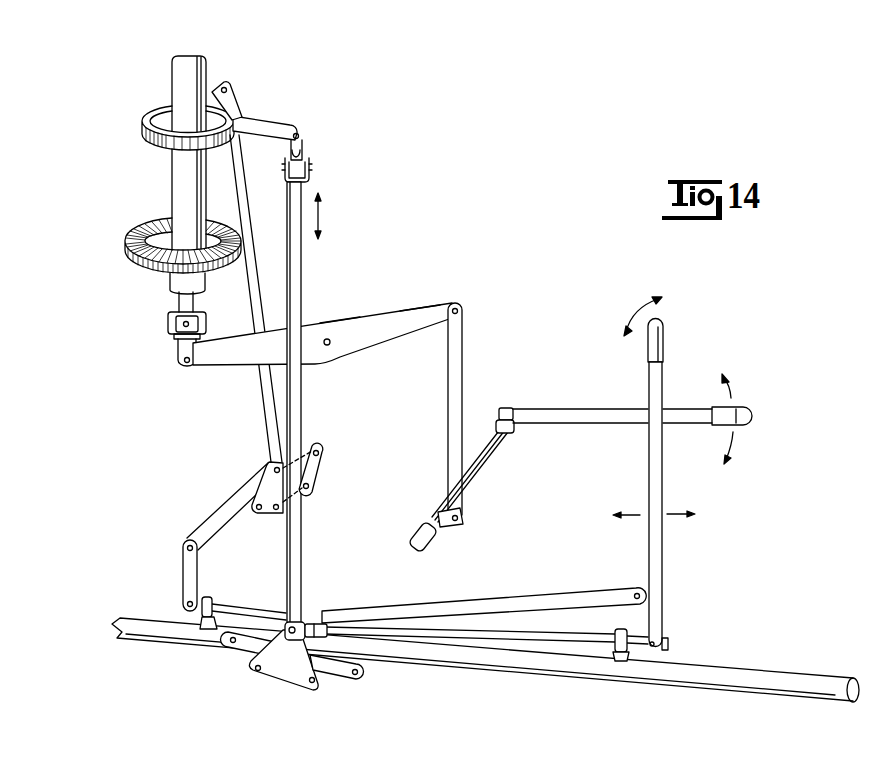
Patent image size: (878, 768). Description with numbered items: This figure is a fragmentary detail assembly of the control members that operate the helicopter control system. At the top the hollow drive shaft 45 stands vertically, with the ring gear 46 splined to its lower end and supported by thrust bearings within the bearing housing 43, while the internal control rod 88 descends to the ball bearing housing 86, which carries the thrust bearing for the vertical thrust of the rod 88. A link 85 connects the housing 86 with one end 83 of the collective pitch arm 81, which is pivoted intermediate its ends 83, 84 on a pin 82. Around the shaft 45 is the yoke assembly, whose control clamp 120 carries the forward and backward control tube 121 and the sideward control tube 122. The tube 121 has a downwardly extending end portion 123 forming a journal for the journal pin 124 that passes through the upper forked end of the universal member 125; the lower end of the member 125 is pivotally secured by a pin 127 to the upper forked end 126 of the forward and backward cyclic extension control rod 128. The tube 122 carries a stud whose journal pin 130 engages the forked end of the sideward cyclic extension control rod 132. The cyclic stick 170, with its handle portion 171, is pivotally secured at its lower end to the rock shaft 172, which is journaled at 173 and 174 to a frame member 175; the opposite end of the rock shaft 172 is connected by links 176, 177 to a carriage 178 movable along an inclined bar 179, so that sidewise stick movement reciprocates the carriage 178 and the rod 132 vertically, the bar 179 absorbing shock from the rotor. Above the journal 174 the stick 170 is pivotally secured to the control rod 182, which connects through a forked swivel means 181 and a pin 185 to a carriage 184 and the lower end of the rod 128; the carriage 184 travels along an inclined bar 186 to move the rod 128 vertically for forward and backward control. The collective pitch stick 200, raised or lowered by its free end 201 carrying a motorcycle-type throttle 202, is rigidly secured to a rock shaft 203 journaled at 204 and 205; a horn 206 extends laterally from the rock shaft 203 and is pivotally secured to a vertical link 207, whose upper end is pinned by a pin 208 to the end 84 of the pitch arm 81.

The bearing housing 43 is at (172, 286).
The hollow drive shaft 45 is at (172, 200).
The ring gear 46 is at (127, 250).
The collective pitch arm 81 is at (338, 332).
The pin 82 is at (327, 346).
The end of pitch arm 83 is at (223, 358).
The end of pitch arm 84 is at (417, 325).
The link 85 is at (180, 349).
The ball bearing housing 86 is at (170, 327).
The internal control rod 88 is at (197, 298).
The control clamp 120 is at (162, 146).
The forward and backward control tube 121 is at (278, 136).
The sideward control tube 122 is at (212, 88).
The downwardly extending end portion 123 is at (303, 130).
The journal pin 124 is at (297, 140).
The universal member 125 is at (305, 150).
The upper forked end 126 is at (310, 164).
The pin 127 is at (313, 172).
The forward and backward cyclic extension control rod 128 is at (303, 266).
The journal pin 130 is at (228, 88).
The sideward cyclic extension control rod 132 is at (243, 207).
The cyclic stick 170 is at (663, 538).
The handle portion 171 is at (663, 328).
The rock shaft 172 is at (577, 632).
The journal 173 is at (211, 600).
The journal 174 is at (621, 661).
The frame member 175 is at (760, 677).
The link 176 is at (185, 572).
The link 177 is at (227, 510).
The carriage 178 is at (272, 476).
The inclined bar 179 is at (318, 462).
The forked swivel means 181 is at (317, 624).
The control rod 182 is at (557, 604).
The carriage 184 is at (278, 660).
The pin 185 is at (290, 627).
The inclined bar 186 is at (340, 672).
The collective pitch stick 200 is at (607, 412).
The free end 201 is at (690, 413).
The motorcycle-type throttle 202 is at (750, 414).
The rock shaft 203 is at (490, 457).
The journal 204 is at (503, 408).
The journal 205 is at (432, 538).
The horn 206 is at (463, 518).
The vertical link 207 is at (462, 358).
The pin 208 is at (463, 312).